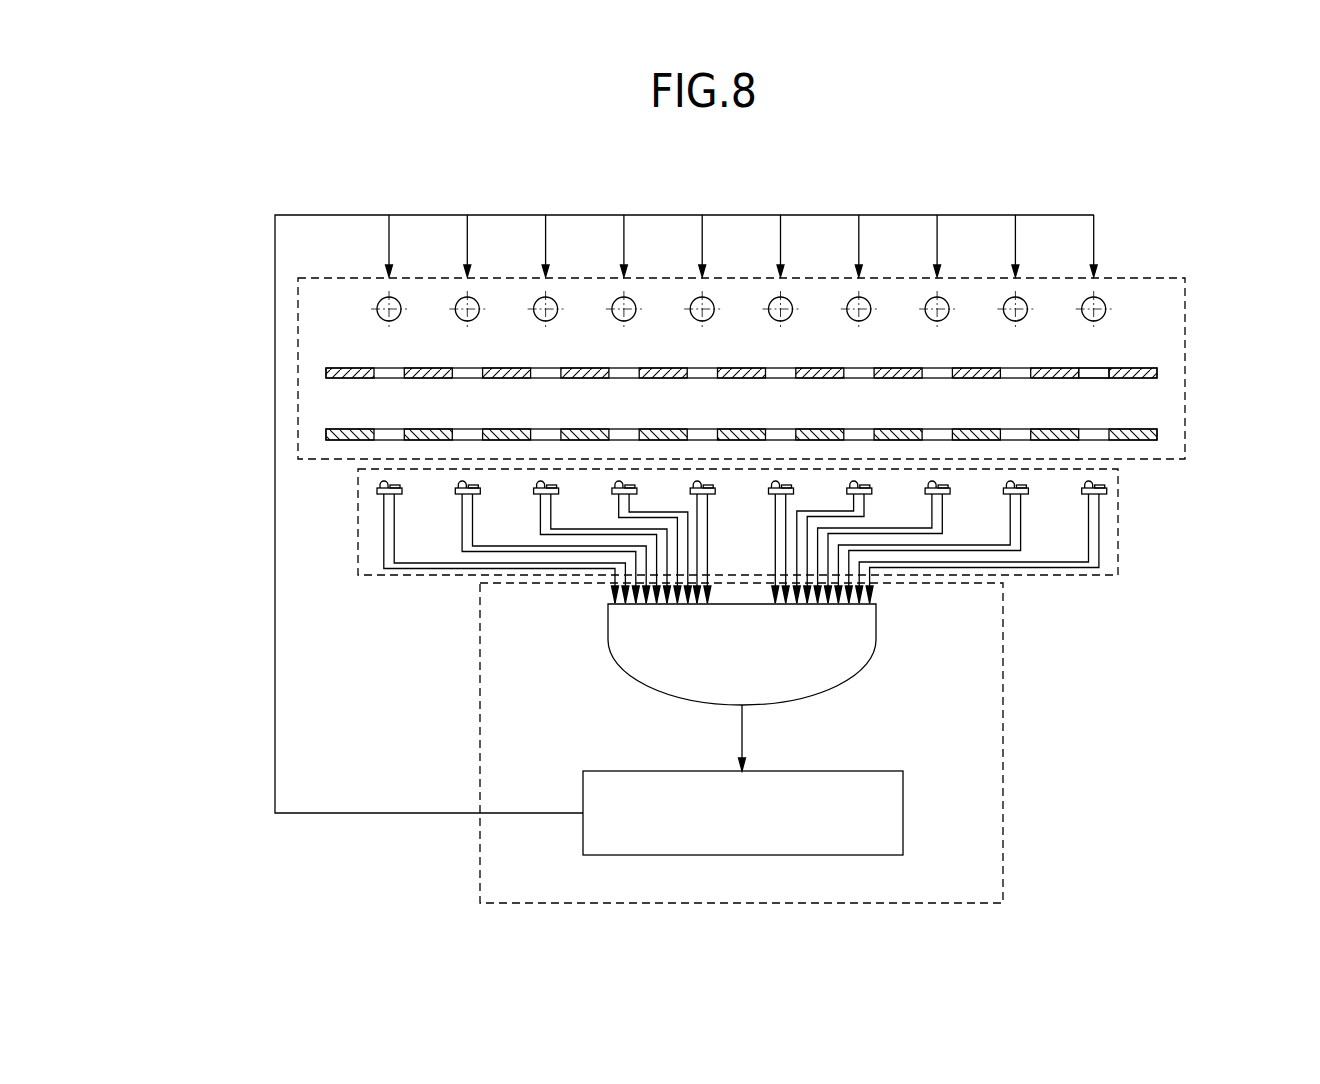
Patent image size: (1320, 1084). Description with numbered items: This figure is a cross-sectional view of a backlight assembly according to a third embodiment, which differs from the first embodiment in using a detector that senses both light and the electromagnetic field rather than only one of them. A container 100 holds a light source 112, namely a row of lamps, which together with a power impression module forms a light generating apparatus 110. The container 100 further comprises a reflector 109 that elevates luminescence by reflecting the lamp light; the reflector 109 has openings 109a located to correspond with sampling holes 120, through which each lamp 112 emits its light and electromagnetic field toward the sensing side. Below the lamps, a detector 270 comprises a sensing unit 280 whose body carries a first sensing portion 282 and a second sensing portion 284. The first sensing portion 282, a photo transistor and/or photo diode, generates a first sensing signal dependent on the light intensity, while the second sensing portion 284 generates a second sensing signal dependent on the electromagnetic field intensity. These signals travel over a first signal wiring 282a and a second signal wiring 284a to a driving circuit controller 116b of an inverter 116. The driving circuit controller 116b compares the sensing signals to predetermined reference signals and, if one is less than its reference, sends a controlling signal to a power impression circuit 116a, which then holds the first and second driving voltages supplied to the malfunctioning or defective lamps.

The container 100 is at (796, 370).
The reflector 109 is at (810, 343).
The openings 109a is at (1098, 373).
The light generating apparatus 110 is at (805, 270).
The light source 112 is at (1104, 318).
The inverter 116 is at (787, 743).
The power impression circuit 116a is at (877, 771).
The driving circuit controller 116b is at (877, 637).
The sampling hole 120 is at (1098, 434).
The detector 270 is at (617, 556).
The sensing unit 280 is at (259, 497).
The first sensing portion 282 is at (377, 491).
The first signal wiring 282a is at (397, 569).
The second sensing portion 284 is at (384, 481).
The second signal wiring 284a is at (447, 564).